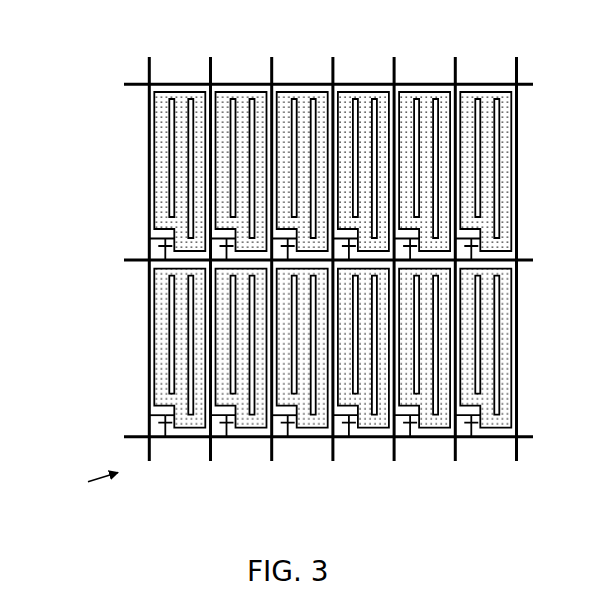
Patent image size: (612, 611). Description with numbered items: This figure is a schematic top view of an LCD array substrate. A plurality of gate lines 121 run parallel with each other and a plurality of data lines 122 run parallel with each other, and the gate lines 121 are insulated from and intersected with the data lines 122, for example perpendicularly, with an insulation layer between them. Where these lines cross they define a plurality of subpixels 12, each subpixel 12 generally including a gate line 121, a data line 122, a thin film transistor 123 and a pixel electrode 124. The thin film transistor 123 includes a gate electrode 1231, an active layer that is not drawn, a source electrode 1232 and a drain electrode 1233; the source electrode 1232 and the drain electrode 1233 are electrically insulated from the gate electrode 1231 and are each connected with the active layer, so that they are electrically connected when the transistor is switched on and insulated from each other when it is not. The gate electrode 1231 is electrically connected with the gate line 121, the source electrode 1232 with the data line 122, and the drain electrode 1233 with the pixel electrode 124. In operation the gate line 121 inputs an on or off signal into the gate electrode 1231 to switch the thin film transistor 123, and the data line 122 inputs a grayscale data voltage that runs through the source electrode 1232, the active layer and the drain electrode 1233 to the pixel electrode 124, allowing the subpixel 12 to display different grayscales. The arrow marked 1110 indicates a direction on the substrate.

The subpixel 12 is at (296, 61).
The gate line 121 is at (138, 82).
The data line 122 is at (149, 78).
The thin film transistor 123 is at (150, 245).
The pixel electrode 124 is at (157, 165).
The gate electrode 1231 is at (290, 430).
The source electrode 1232 is at (155, 415).
The drain electrode 1233 is at (174, 407).
The first direction 1110 is at (89, 488).